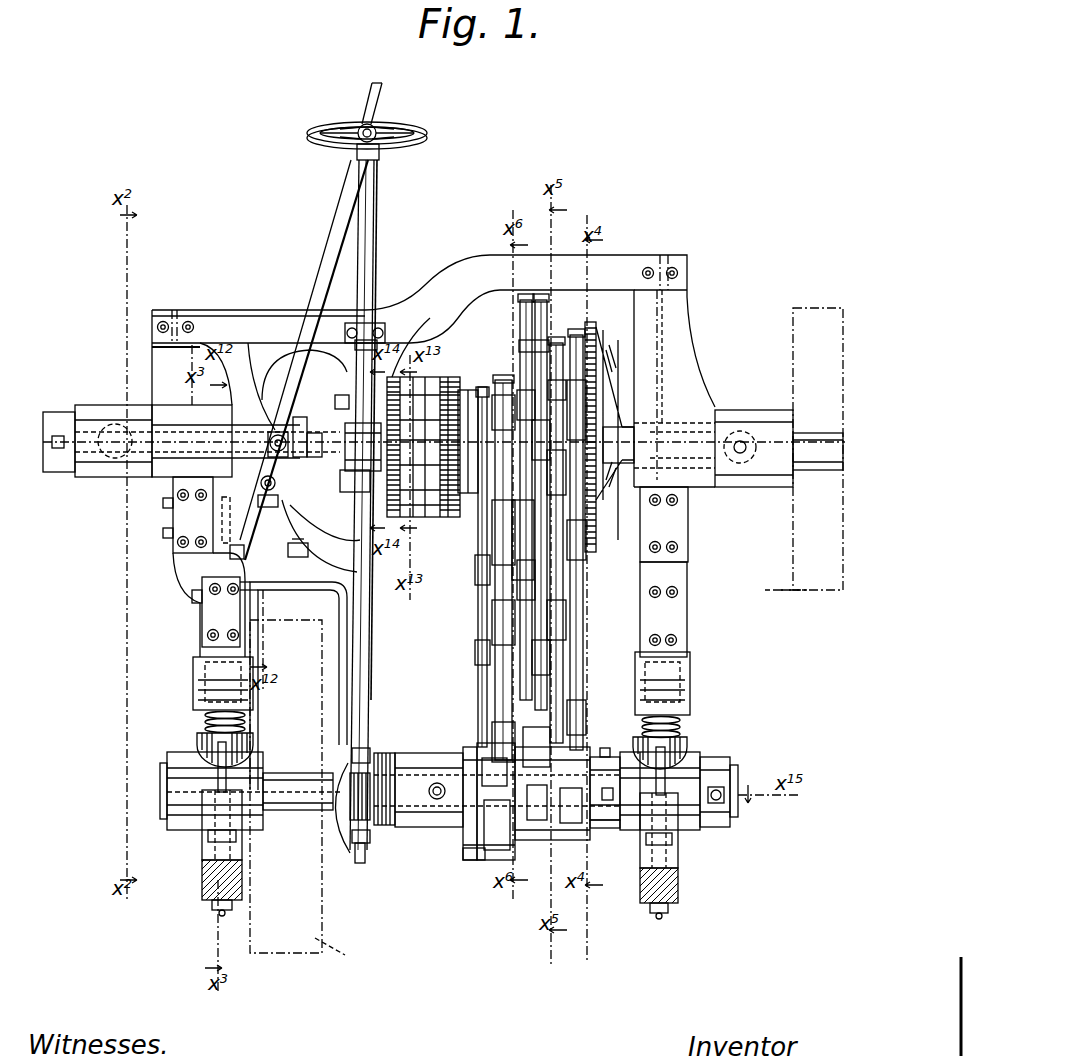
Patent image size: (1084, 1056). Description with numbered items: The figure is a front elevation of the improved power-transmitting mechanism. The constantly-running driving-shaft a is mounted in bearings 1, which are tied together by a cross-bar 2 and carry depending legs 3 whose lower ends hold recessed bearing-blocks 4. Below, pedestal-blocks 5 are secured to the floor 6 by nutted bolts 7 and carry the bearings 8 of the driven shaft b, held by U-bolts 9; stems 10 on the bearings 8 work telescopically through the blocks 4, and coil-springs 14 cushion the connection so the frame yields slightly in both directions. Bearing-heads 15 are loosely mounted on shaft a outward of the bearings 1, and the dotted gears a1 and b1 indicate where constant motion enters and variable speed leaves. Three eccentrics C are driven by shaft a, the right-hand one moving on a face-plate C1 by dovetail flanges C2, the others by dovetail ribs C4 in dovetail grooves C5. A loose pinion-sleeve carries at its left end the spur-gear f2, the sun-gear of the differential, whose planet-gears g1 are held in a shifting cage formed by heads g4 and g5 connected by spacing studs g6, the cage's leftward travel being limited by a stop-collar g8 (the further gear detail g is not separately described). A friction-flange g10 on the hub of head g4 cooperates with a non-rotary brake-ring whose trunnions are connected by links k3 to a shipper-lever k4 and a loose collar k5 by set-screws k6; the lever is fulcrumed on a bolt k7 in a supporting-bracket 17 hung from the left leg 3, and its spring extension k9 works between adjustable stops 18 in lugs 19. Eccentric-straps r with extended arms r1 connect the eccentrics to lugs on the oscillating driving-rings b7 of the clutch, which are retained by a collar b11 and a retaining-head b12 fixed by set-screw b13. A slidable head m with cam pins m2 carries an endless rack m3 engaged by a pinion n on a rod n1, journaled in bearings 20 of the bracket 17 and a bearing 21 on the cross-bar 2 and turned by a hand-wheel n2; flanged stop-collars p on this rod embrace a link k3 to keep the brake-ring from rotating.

The bearings 1 is at (155, 475).
The cross-bar 2 is at (433, 272).
The depending legs 3 is at (186, 575).
The bearing-blocks 4 is at (193, 694).
The pedestal-blocks 5 is at (205, 836).
The floor 6 is at (205, 895).
The nutted bolt 7 is at (238, 840).
The bearings 8 is at (260, 760).
The nutted staples or U-bolts 9 is at (197, 752).
The stems 10 is at (205, 725).
The coil-spring 14 is at (240, 722).
The bearing-heads 15 is at (88, 410).
The supporting-bracket 17 is at (340, 628).
The adjustable stops 18 is at (306, 548).
The lugs 19 is at (245, 558).
The bearings 20 is at (372, 748).
The bearing 21 is at (378, 330).
The driving-shaft a is at (818, 470).
The gear a1 is at (777, 585).
The driven shaft b is at (310, 830).
The gear b1 is at (355, 955).
The oscillating driving-rings b7 is at (540, 735).
The collar or flange b11 is at (465, 850).
The retaining-head b12 is at (606, 825).
The set-screw b13 is at (608, 788).
The eccentrics C is at (550, 345).
The face-plate C1 is at (590, 335).
The dovetail flanges C2 is at (625, 435).
The dovetail ribs C4 is at (530, 560).
The dovetail grooves C5 is at (518, 342).
The spur-gear f2 is at (465, 395).
The gear g is at (348, 488).
The planet-gears g1 is at (440, 372).
The head g4 is at (420, 332).
The head g5 is at (477, 582).
The spacing bolts or studs g6 is at (300, 352).
The stop-collar g8 is at (282, 494).
The friction-flange g10 is at (350, 340).
The links k3 is at (338, 396).
The shipper-lever k4 is at (318, 285).
The loose collar k5 is at (258, 325).
The set-screws k6 is at (275, 430).
The bolt k7 is at (261, 483).
The spring extension k9 is at (262, 540).
The slidable head m is at (430, 770).
The cam pins m2 is at (435, 800).
The rack m3 is at (410, 752).
The pinion n is at (350, 800).
The rod n1 is at (365, 698).
The hand-wheel n2 is at (430, 138).
The flanged stop-collars p is at (350, 425).
The eccentric-straps r is at (528, 294).
The extended arms r1 is at (497, 672).